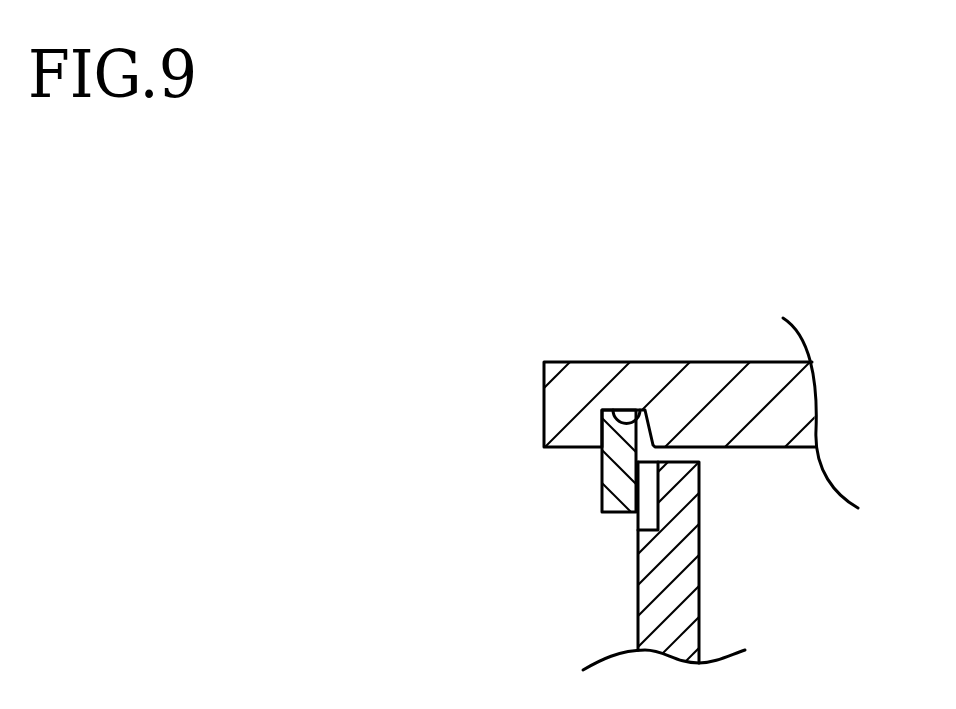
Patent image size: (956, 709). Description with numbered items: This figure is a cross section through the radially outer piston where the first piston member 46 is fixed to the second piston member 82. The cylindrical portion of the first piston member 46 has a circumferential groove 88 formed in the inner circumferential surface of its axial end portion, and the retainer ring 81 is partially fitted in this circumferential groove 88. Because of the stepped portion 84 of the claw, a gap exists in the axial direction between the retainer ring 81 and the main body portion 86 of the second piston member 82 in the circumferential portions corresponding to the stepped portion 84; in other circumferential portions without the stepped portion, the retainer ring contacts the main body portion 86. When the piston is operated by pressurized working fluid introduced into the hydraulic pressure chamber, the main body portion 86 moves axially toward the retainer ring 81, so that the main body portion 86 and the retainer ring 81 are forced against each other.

The first piston member 46 is at (700, 392).
The retainer ring 81 is at (615, 477).
The circumferential groove 88 is at (615, 407).
The stepped portion 84 is at (652, 500).
The main body portion 86 is at (672, 566).
The second piston member 82 is at (683, 596).